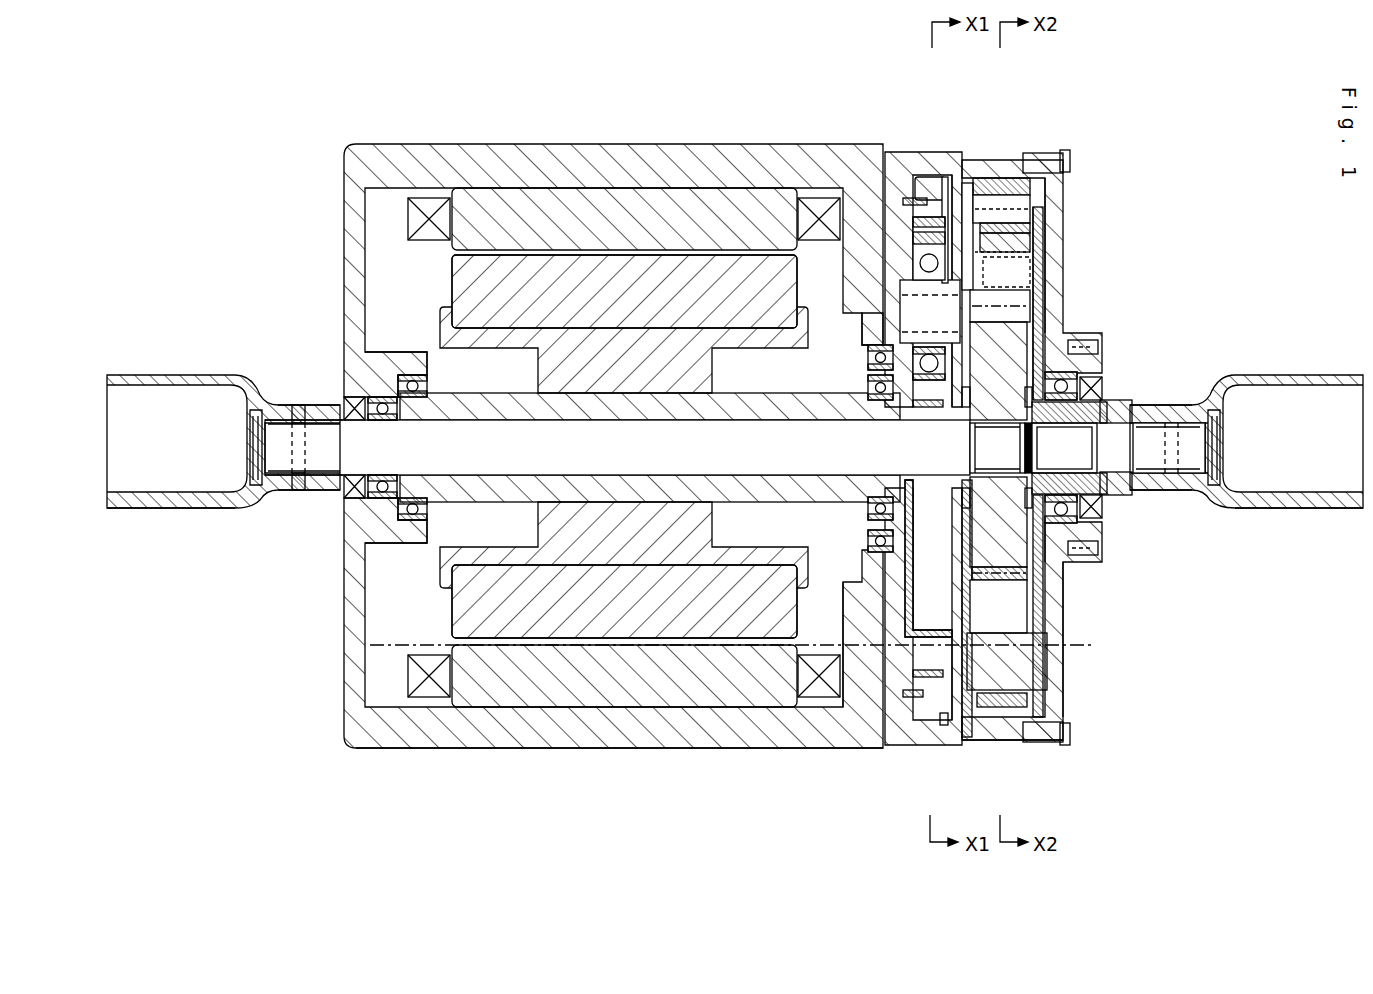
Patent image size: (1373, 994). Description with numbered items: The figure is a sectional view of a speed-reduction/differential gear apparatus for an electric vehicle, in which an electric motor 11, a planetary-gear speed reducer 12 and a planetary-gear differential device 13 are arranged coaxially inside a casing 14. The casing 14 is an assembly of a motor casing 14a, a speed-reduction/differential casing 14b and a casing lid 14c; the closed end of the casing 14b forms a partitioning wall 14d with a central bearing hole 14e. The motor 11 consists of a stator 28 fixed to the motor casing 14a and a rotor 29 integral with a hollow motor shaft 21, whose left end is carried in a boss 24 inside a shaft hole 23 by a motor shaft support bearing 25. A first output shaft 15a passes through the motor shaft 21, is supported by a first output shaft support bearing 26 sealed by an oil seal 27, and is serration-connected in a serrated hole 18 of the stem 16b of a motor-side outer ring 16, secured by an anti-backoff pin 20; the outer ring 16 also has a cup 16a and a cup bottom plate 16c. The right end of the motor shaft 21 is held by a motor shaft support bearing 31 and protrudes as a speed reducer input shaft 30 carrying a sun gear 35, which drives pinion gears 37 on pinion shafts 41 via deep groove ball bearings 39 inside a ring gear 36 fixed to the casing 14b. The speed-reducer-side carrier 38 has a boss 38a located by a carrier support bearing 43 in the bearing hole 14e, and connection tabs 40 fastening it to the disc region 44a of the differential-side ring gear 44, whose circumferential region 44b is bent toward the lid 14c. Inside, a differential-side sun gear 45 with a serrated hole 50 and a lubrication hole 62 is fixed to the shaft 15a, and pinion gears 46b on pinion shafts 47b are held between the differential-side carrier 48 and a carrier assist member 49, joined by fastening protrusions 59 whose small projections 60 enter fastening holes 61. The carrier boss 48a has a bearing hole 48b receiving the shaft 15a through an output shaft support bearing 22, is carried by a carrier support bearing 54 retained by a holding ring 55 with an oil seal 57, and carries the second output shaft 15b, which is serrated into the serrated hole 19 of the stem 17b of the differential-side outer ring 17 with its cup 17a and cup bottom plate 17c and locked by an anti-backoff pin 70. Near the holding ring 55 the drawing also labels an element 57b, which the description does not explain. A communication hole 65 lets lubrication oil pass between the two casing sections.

The electric motor 11 is at (522, 176).
The planetary-gear speed reducer 12 is at (937, 160).
The planetary-gear differential device 13 is at (1000, 160).
The casing 14 is at (716, 138).
The motor casing 14a is at (535, 748).
The speed-reduction/differential casing 14b is at (1020, 742).
The casing lid 14c is at (1063, 618).
The partitioning wall 14d is at (885, 592).
The bearing hole 14e is at (876, 340).
The first output shaft 15a is at (463, 458).
The second output shaft 15b is at (1190, 473).
The motor-side outer ring 16 is at (154, 365).
The cup 16a is at (153, 508).
The stem 16b is at (323, 478).
The cup bottom plate 16c is at (248, 455).
The differential-side outer ring 17 is at (1302, 365).
The cup 17a is at (1286, 508).
The stem 17b is at (1150, 405).
The cup bottom plate 17c is at (1218, 458).
The serrated hole 18 is at (281, 410).
The serrated hole 19 is at (1212, 445).
The anti-backoff pin 20 is at (298, 410).
The motor shaft 21 is at (636, 405).
The output shaft support bearing 22 is at (1095, 478).
The shaft hole 23 is at (376, 497).
The boss 24 is at (403, 362).
The motor shaft support bearing 25 is at (417, 386).
The first output shaft support bearing 26 is at (380, 400).
The oil seal 27 is at (356, 400).
The stator 28 is at (478, 200).
The rotor 29 is at (570, 267).
The speed reducer input shaft 30 is at (897, 405).
The motor shaft support bearing 31 is at (868, 390).
The speed-reducer-side sun gear 35 is at (925, 410).
The speed-reducer-side ring gear 36 is at (920, 185).
The speed-reducer-side pinion gear 37 is at (924, 256).
The speed-reducer-side carrier 38 is at (905, 620).
The boss 38a is at (866, 525).
The deep groove ball bearing 39 is at (905, 263).
The connection tab 40 is at (935, 735).
The speed-reducer-side pinion shaft 41 is at (903, 308).
The carrier support bearing 43 is at (868, 357).
The differential-side ring gear 44 is at (1015, 180).
The disc region 44a is at (1048, 585).
The circumferential region 44b is at (998, 712).
The differential-side sun gear 45 is at (1032, 287).
The differential-side pinion gear 46b is at (1032, 240).
The differential-side pinion shaft 47b is at (1032, 263).
The differential-side carrier 48 is at (1040, 235).
The boss 48a is at (1102, 405).
The bearing hole 48b is at (1062, 440).
The differential-side carrier assist member 49 is at (960, 207).
The serrated hole 50 is at (1092, 519).
The differential-side carrier support bearing 54 is at (1068, 511).
The holding ring 55 is at (1085, 555).
The oil seal 57 is at (1066, 386).
The rotor yoke 57b is at (1030, 195).
The fastening protrusion 59 is at (1010, 672).
The small projection 60 is at (950, 730).
The fastening hole 61 is at (970, 705).
The lubrication hole 62 is at (1032, 332).
The communication hole 65 is at (877, 690).
The anti-backoff pin 70 is at (1180, 423).